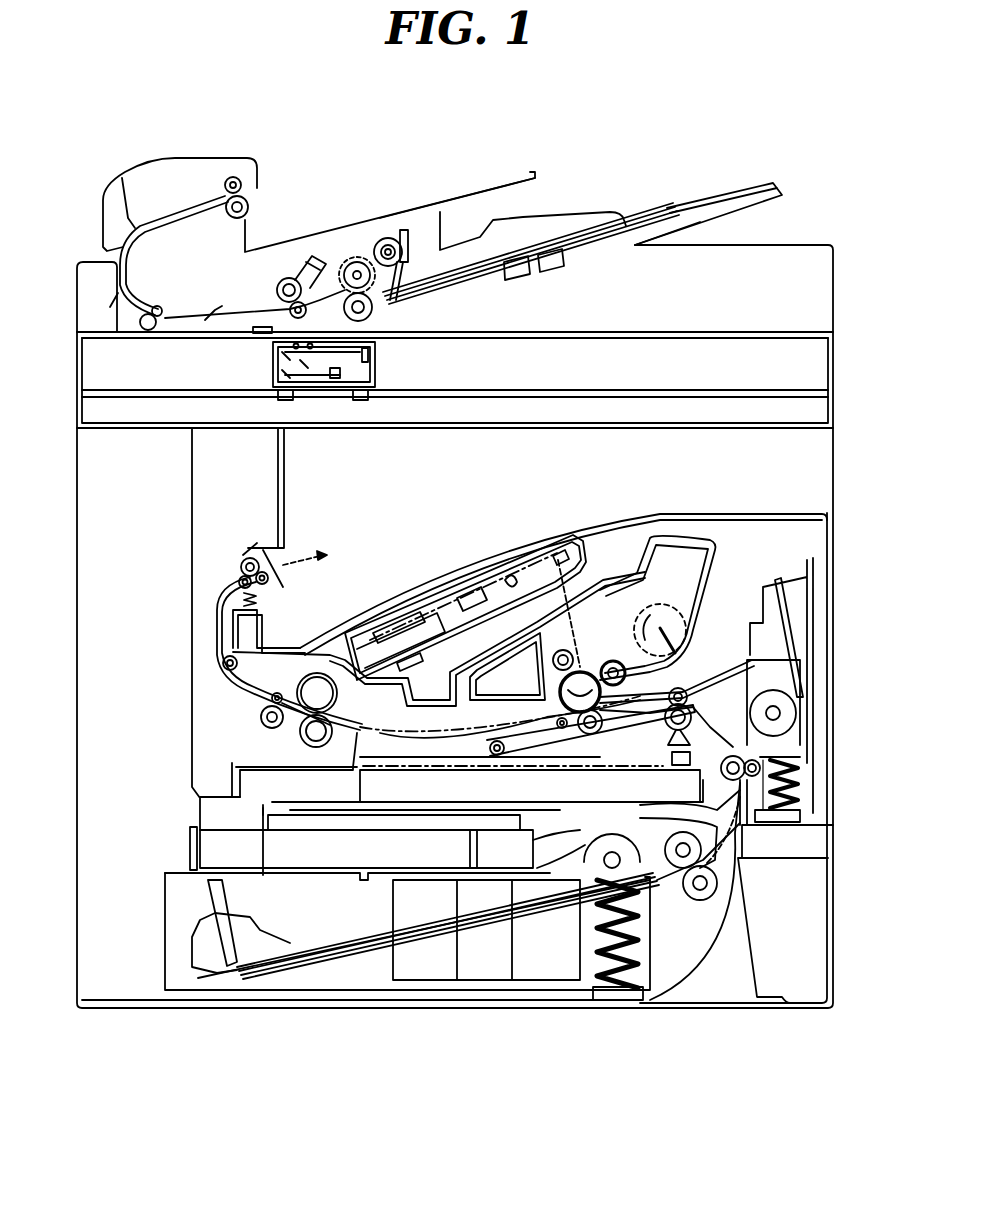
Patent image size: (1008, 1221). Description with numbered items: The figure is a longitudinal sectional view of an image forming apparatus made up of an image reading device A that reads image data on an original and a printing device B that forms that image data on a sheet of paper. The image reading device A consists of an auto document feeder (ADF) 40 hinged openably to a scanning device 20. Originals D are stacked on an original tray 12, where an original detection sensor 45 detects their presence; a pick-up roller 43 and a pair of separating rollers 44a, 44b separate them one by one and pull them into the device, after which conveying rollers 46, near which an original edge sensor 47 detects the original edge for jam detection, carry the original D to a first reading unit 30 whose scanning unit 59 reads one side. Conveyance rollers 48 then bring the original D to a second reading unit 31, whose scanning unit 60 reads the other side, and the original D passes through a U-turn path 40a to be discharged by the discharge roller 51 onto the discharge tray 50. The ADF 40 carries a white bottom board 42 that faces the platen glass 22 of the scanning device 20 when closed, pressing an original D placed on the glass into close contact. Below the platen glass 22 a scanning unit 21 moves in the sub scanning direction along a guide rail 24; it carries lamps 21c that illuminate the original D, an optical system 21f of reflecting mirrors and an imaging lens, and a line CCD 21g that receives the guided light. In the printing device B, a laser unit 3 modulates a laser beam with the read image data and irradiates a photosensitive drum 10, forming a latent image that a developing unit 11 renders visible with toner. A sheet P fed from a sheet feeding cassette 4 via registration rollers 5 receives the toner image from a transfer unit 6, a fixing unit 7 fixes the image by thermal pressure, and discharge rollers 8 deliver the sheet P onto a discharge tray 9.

The scanning device 20 is at (835, 368).
The white bottom board 42 is at (630, 332).
The platen glass 22 is at (600, 338).
The guide rail 24 is at (648, 390).
The scanning unit 60 is at (110, 300).
The auto document feeder (ADF) 40 is at (175, 152).
The U-turn path 40a is at (130, 232).
The second reading unit 31 is at (139, 290).
The discharge roller 51 is at (248, 205).
The conveyance rollers 48 is at (148, 331).
The first reading unit 30 is at (197, 324).
The scanning unit 59 is at (210, 308).
The conveying rollers 46 is at (281, 296).
The original edge sensor 47 is at (305, 318).
The separating roller 44a is at (345, 262).
The separating roller 44b is at (372, 312).
The pick-up roller 43 is at (380, 238).
The discharge tray 50 is at (436, 200).
The original detection sensor 45 is at (440, 285).
The original D is at (640, 210).
The original tray 12 is at (725, 195).
The image reading device A is at (586, 166).
The scanning unit 21 is at (380, 353).
The line CCD 21g is at (380, 372).
The lamps 21c is at (300, 350).
The optical system 21f is at (336, 378).
The printing device B is at (777, 504).
The discharge rollers 8 is at (248, 548).
The fixing unit 7 is at (313, 672).
The discharge tray 9 is at (393, 600).
The laser unit 3 is at (443, 600).
The photosensitive drum 10 is at (555, 685).
The developing unit 11 is at (655, 678).
The transfer unit 6 is at (592, 736).
The registration rollers 5 is at (668, 745).
The sheet feeding cassette 4 is at (666, 935).
The sheet P is at (312, 935).